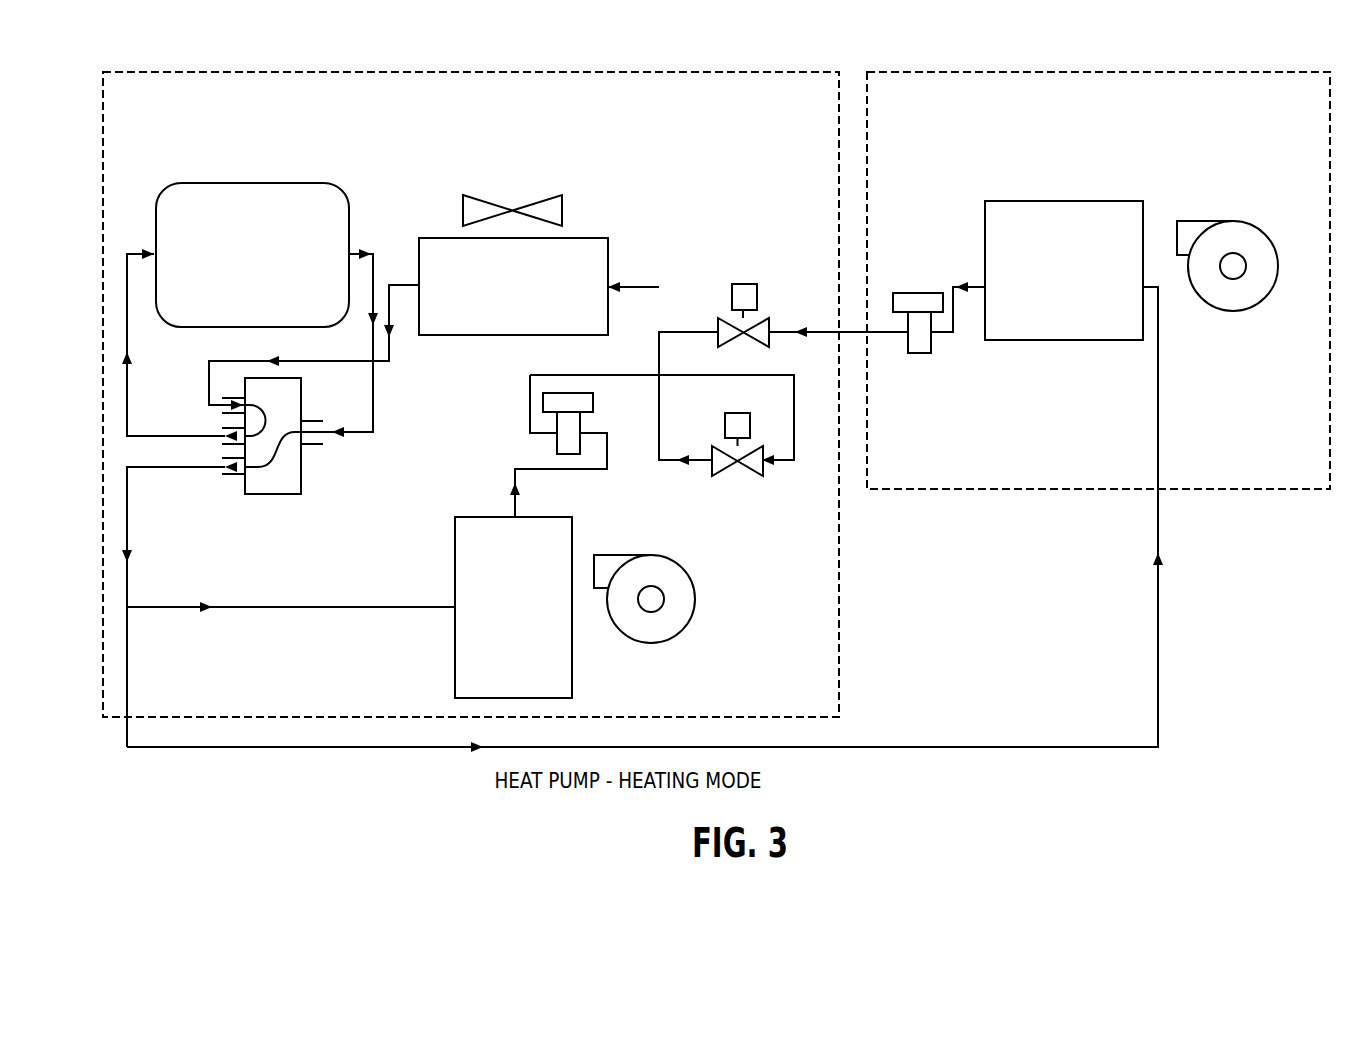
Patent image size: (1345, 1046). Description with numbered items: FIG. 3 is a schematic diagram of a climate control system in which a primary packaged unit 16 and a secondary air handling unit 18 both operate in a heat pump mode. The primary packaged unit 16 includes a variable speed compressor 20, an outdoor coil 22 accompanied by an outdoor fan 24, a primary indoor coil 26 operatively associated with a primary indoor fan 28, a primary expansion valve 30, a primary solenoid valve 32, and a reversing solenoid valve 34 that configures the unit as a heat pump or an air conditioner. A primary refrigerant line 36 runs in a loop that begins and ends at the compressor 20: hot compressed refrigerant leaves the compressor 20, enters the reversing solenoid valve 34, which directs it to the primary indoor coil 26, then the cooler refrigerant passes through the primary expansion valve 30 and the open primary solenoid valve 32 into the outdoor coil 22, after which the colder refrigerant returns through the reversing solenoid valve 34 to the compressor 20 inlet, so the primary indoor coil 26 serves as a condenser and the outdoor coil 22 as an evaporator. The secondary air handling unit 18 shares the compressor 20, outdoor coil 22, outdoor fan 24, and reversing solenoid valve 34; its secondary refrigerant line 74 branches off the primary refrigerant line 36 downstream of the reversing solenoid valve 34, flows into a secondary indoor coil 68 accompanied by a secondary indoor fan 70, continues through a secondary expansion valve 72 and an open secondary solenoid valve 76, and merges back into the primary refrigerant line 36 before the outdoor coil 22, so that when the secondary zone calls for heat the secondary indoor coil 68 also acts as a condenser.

The primary packaged unit 16 is at (718, 72).
The secondary air handling unit 18 is at (1262, 72).
The variable speed compressor 20 is at (228, 183).
The outdoor coil 22 is at (600, 238).
The outdoor fan 24 is at (542, 198).
The primary indoor coil 26 is at (455, 668).
The primary indoor fan 28 is at (680, 635).
The primary expansion valve 30 is at (557, 443).
The primary solenoid valve 32 is at (742, 468).
The reversing solenoid valve 34 is at (303, 470).
The primary refrigerant line 36 is at (275, 607).
The secondary indoor coil 68 is at (1115, 201).
The secondary indoor fan 70 is at (1229, 311).
The secondary expansion valve 72 is at (917, 353).
The secondary refrigerant line 74 is at (1002, 747).
The secondary solenoid valve 76 is at (743, 284).